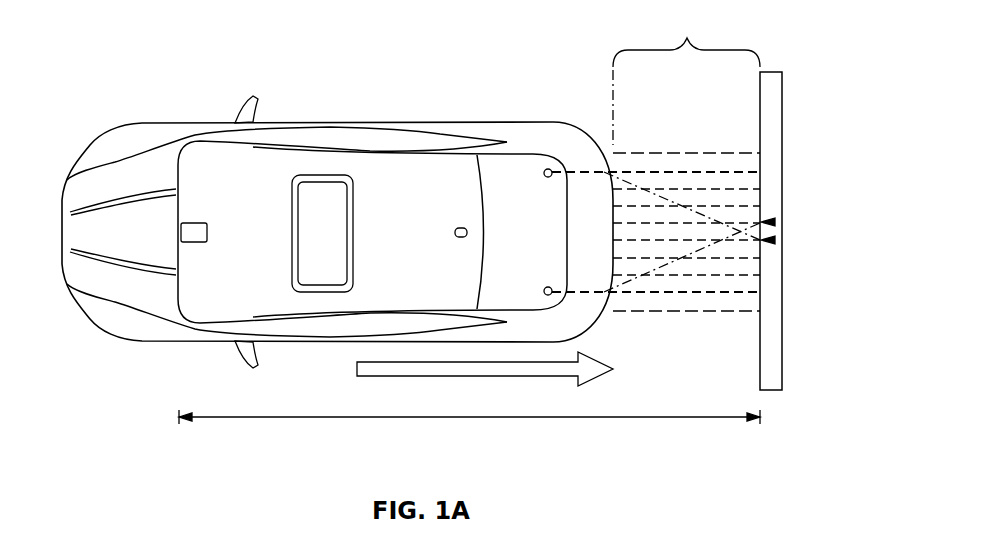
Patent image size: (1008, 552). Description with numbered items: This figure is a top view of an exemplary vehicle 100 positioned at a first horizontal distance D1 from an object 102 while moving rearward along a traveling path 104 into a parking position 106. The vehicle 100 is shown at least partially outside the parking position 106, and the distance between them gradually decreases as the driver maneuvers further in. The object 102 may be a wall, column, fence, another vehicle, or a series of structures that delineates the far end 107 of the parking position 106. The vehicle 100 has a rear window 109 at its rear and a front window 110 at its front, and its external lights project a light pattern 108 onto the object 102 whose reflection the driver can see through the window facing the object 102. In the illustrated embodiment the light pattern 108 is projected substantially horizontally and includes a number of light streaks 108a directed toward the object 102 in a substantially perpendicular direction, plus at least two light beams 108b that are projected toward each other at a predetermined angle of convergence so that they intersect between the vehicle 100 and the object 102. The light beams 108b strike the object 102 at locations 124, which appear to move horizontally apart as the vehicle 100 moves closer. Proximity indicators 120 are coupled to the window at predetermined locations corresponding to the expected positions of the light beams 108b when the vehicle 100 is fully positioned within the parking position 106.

The vehicle 100 is at (387, 122).
The object 102 is at (783, 105).
The traveling path 104 is at (490, 375).
The parking position 106 is at (446, 419).
The far end 107 is at (758, 438).
The light pattern 108 is at (681, 143).
The light streaks 108a is at (740, 313).
The light beams 108b is at (710, 217).
The rear window 109 is at (251, 157).
The front window 110 is at (492, 164).
The proximity indicators 120 is at (551, 169).
The locations 124 is at (770, 220).
The first horizontal distance D1 is at (686, 40).